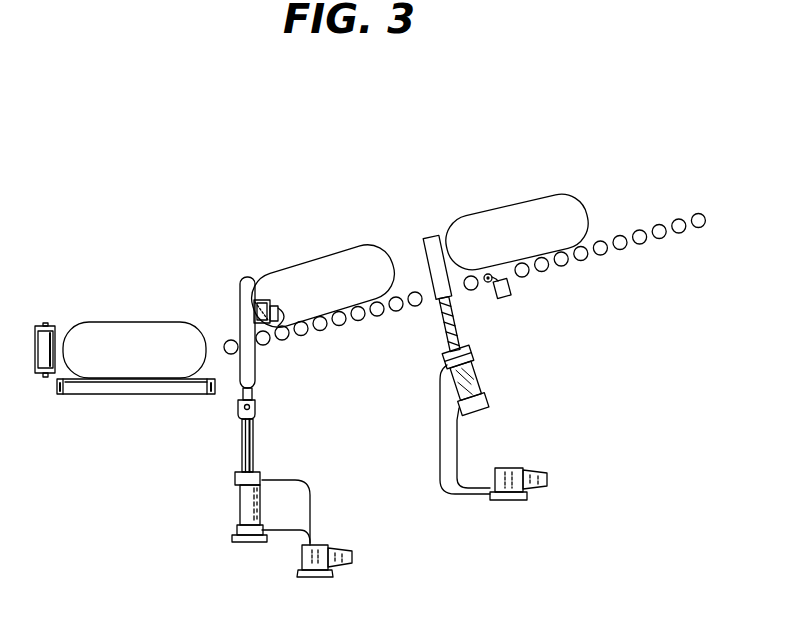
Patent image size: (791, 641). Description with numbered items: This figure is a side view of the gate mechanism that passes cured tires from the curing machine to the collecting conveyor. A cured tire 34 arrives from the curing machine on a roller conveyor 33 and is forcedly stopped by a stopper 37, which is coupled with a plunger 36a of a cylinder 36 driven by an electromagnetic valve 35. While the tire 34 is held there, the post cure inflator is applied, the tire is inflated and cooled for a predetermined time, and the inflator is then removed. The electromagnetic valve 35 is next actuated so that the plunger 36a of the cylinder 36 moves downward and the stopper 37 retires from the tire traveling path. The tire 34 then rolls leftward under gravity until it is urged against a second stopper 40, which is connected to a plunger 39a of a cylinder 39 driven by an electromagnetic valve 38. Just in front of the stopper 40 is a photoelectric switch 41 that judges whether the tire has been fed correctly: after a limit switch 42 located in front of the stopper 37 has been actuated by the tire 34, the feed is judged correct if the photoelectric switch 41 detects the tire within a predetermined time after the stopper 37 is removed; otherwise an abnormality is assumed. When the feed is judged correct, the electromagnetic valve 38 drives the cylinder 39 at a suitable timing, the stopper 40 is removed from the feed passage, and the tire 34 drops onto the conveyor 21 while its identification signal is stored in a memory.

The conveyor 21 is at (125, 395).
The roller conveyor 33 is at (623, 249).
The cured tire 34 is at (143, 321).
The electromagnetic valve 35 is at (514, 469).
The cylinder 36 is at (479, 371).
The plunger 36a is at (448, 328).
The stopper 37 is at (422, 236).
The electromagnetic valve 38 is at (323, 546).
The cylinder 39 is at (240, 505).
The plunger 39a is at (243, 440).
The stopper 40 is at (241, 284).
The photoelectric switch 41 is at (280, 336).
The limit switch 42 is at (505, 296).